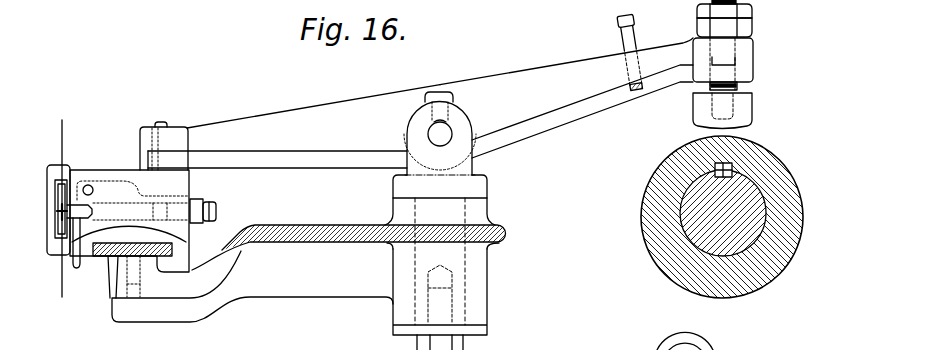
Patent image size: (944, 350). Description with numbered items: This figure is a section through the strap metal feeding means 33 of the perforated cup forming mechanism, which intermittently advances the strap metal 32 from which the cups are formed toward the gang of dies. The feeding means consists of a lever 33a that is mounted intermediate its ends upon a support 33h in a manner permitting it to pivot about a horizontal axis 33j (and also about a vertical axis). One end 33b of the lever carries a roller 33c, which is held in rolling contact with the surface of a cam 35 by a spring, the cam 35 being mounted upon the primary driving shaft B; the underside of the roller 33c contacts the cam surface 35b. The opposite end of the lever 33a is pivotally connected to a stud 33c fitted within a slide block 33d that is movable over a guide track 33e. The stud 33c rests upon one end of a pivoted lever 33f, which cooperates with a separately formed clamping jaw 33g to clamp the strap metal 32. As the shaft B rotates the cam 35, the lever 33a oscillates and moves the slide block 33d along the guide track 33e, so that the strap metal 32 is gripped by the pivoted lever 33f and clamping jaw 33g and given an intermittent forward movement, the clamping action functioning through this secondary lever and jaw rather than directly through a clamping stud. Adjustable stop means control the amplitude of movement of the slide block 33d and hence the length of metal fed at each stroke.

The strap metal 32 is at (62, 130).
The strap metal feeding means 33 is at (418, 89).
The lever 33a is at (477, 73).
The end of lever 33b is at (748, 55).
The roller / stud 33c is at (163, 126).
The slide block 33d is at (104, 161).
The guide track 33e is at (110, 299).
The pivoted lever 33f is at (100, 190).
The clamping jaw 33g is at (76, 268).
The support 33h is at (480, 192).
The horizontal axis 33j is at (442, 134).
The cam 35 is at (752, 254).
The cam surface 35b is at (758, 216).
The primary driving shaft B is at (712, 242).